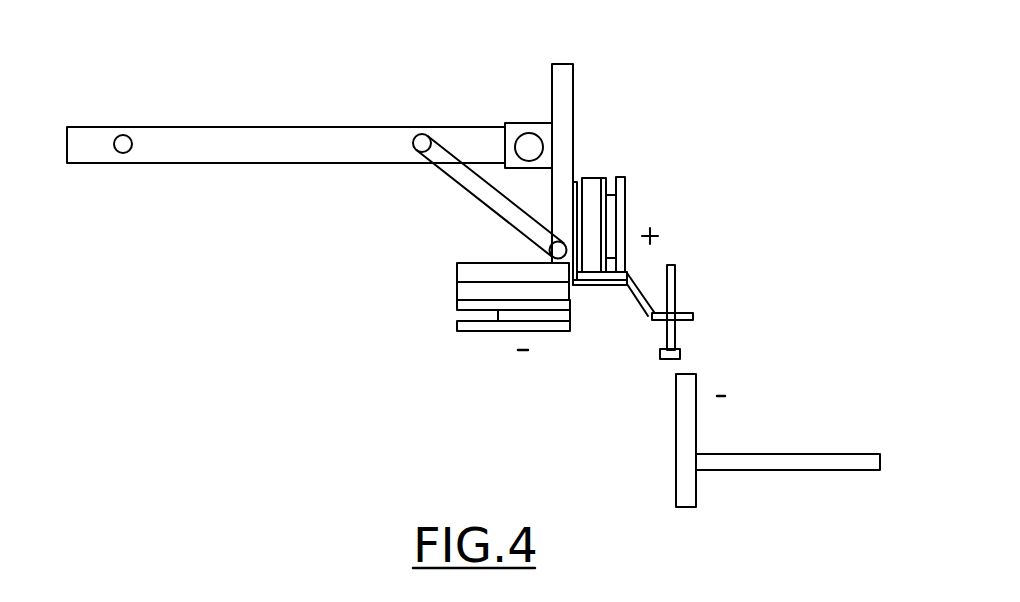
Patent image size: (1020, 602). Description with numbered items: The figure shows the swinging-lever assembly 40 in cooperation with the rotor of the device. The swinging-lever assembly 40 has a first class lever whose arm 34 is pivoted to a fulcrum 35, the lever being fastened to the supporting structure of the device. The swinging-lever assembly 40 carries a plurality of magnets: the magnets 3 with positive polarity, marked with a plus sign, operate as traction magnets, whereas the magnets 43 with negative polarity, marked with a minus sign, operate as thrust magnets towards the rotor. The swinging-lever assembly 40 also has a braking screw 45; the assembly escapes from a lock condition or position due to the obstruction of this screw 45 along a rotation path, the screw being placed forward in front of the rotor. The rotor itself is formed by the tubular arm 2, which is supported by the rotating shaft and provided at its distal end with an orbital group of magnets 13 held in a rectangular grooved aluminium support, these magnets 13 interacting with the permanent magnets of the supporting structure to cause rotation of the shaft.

The swinging-lever assembly 40 is at (303, 88).
The arm 34 is at (237, 135).
The fulcrum 35 is at (527, 132).
The magnets 3 is at (623, 222).
The magnets 43 is at (457, 292).
The braking screw 45 is at (676, 305).
The orbital group of magnets 13 is at (678, 428).
The tubular arm 2 is at (788, 453).